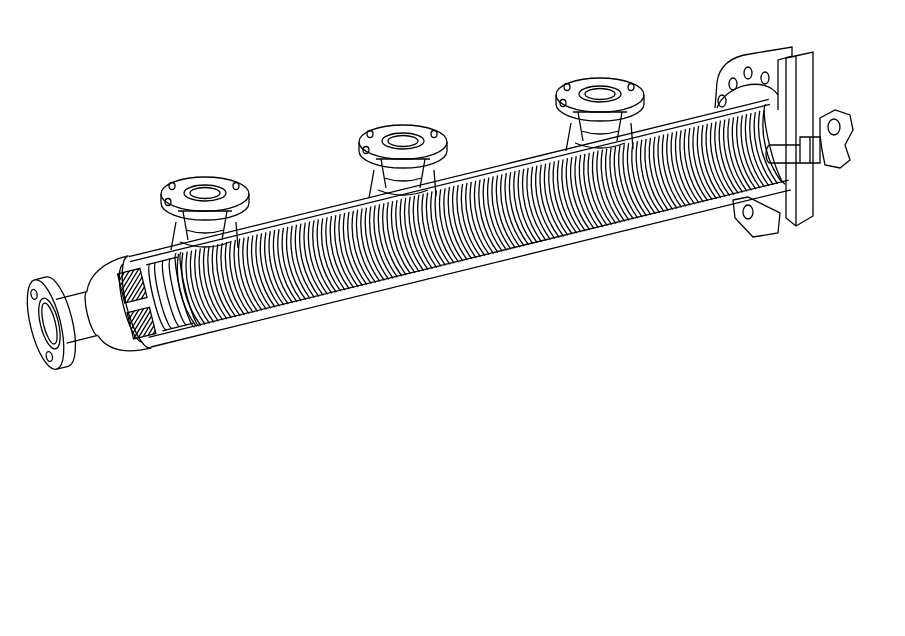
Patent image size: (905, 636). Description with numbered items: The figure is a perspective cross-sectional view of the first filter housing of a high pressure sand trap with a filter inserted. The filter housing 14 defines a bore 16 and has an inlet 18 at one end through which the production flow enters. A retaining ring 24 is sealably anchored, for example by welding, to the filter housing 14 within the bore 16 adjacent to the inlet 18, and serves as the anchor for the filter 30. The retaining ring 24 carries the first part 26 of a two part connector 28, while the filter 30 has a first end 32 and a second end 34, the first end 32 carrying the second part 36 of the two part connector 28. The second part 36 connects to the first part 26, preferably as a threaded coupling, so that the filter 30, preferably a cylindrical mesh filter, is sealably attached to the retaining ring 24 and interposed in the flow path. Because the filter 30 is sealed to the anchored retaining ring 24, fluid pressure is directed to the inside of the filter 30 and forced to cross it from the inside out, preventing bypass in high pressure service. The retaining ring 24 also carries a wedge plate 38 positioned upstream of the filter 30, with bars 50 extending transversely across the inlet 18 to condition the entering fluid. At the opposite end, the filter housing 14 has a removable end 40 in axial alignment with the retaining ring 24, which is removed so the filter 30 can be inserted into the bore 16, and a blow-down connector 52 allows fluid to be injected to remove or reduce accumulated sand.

The filter housing 14 is at (103, 73).
The bore 16 is at (460, 223).
The inlet 18 is at (51, 322).
The retaining ring 24 is at (146, 303).
The first part 26 is at (169, 294).
The two part connector 28 is at (176, 292).
The filter 30 is at (476, 219).
The first end 32 is at (185, 290).
The second end 34 is at (740, 229).
The second part 36 is at (183, 252).
The wedge plate 38 is at (103, 323).
The removable end 40 is at (791, 213).
The bars 50 is at (116, 308).
The blow-down connector 52 is at (843, 165).